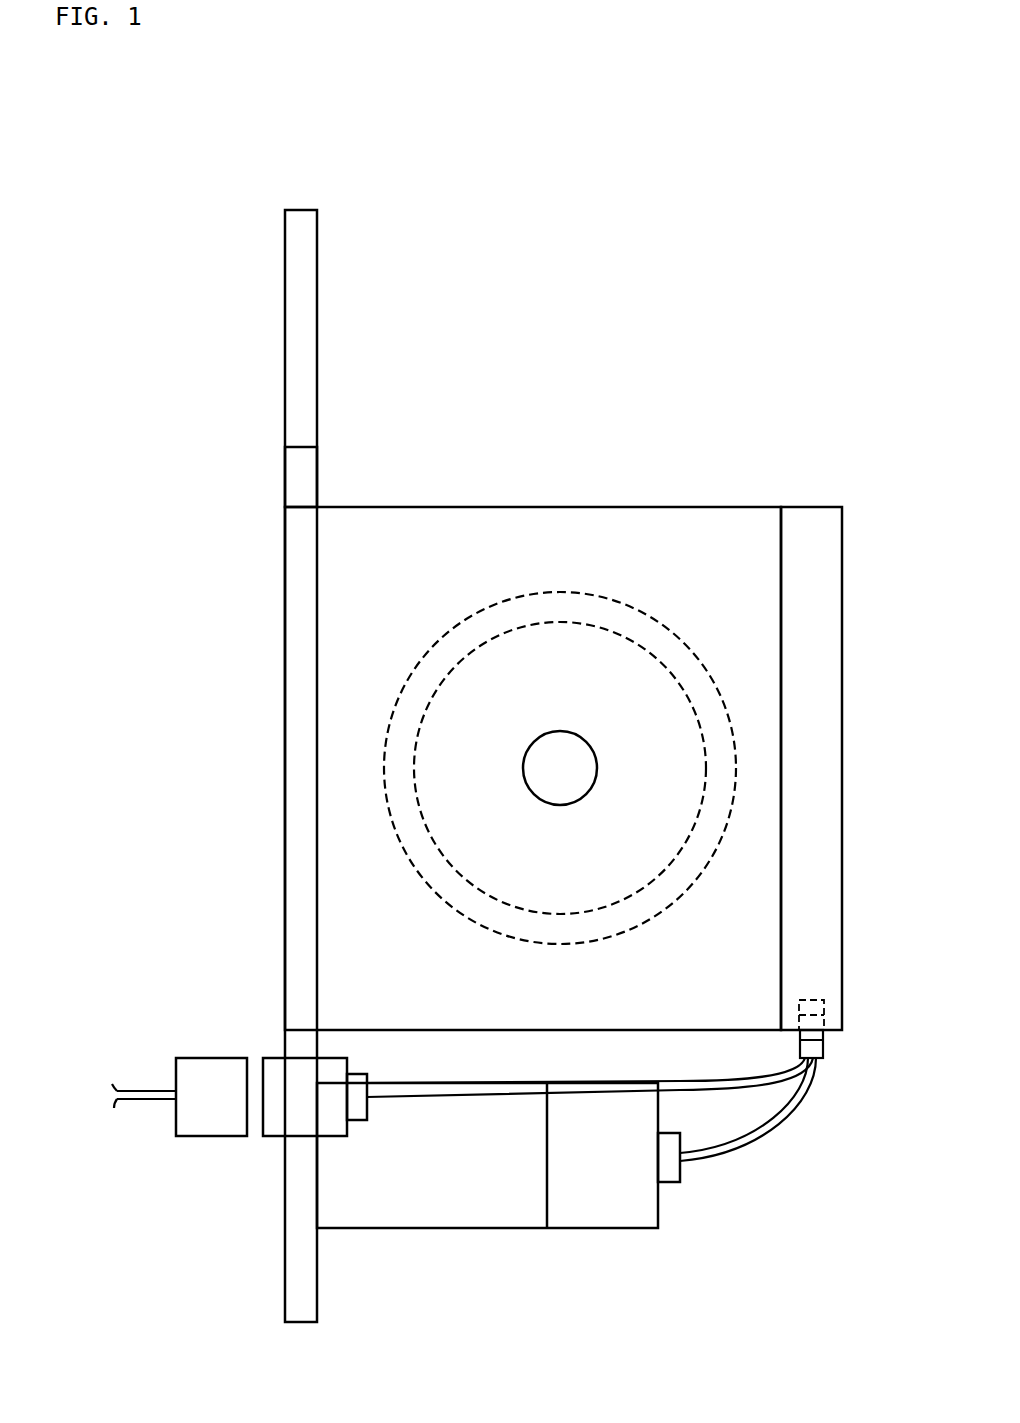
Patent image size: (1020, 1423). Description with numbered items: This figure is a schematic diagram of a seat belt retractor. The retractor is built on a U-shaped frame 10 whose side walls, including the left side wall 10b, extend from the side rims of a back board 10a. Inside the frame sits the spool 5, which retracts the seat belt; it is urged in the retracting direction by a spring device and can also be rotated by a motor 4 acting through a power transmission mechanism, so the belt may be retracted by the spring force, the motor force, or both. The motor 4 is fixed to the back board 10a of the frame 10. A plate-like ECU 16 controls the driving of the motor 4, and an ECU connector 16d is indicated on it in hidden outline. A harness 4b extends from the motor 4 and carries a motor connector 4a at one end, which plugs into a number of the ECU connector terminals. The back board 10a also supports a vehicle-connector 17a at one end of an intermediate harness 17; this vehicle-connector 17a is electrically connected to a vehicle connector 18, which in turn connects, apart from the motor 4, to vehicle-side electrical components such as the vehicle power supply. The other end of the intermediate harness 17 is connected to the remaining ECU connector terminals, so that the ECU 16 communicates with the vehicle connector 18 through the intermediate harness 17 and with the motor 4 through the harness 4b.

The U-shaped frame 10 is at (276, 372).
The back board 10a is at (307, 477).
The left side wall 10b is at (515, 527).
The spool 5 is at (583, 623).
The ECU 16 is at (812, 528).
The ECU connector (hidden) 16d is at (812, 1034).
The motor connector 4a is at (813, 1048).
The intermediate harness 17 is at (740, 1082).
The harness 4b is at (765, 1132).
The motor 4 is at (425, 1195).
The vehicle-connector 17a is at (290, 1105).
The vehicle connector 18 is at (205, 1075).